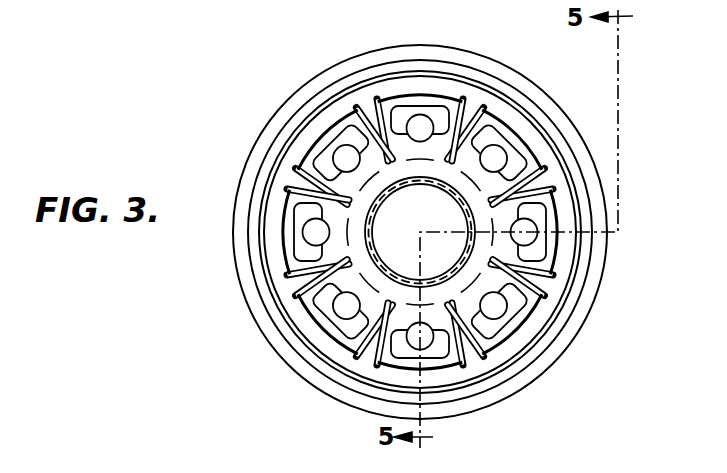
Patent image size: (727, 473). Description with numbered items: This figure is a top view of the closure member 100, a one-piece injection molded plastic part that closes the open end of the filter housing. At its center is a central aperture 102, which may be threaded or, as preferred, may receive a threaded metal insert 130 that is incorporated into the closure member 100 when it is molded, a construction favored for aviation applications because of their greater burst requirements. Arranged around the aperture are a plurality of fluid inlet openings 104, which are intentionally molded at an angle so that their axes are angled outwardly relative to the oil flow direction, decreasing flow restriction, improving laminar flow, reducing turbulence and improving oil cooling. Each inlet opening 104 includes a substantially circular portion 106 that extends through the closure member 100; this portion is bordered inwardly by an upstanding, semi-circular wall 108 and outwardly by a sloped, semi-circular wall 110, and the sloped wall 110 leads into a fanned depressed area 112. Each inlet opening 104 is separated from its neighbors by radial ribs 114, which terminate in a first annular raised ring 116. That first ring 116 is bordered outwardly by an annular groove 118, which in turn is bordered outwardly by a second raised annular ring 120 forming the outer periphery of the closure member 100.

The closure member 100 is at (428, 226).
The central aperture 102 is at (397, 276).
The fluid inlet openings 104 is at (524, 139).
The substantially circular portion 106 is at (375, 232).
The upstanding semi-circular wall 108 is at (372, 166).
The sloped semi-circular wall 110 is at (333, 162).
The fanned depressed area 112 is at (342, 134).
The radial ribs 114 is at (445, 163).
The first annular raised ring 116 is at (562, 293).
The annular groove 118 is at (587, 207).
The second raised annular ring 120 is at (570, 340).
The insert 130 is at (392, 190).